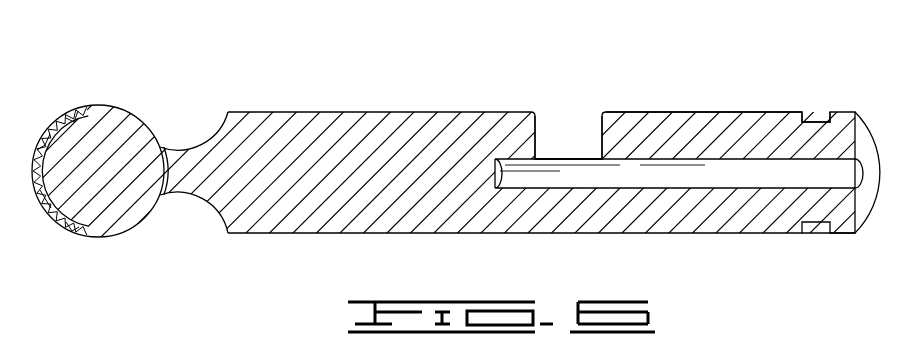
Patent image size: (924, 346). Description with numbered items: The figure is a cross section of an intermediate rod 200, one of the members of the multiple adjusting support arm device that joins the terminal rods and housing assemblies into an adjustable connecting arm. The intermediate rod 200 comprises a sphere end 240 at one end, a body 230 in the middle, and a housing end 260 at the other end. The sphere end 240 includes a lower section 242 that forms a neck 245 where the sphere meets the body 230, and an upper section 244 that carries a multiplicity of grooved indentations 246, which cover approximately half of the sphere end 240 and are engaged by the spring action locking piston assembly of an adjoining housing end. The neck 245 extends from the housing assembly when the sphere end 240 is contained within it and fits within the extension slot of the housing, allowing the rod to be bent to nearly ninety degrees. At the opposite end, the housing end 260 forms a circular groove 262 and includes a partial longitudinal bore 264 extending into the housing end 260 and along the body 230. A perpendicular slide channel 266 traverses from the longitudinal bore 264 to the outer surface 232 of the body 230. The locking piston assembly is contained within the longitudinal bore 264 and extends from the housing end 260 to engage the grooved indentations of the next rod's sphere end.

The intermediate rod 200 is at (455, 163).
The body 230 is at (530, 233).
The outer surface 232 is at (678, 112).
The sphere end 240 is at (113, 238).
The lower section 242 is at (160, 147).
The upper section 244 is at (42, 130).
The neck 245 is at (192, 197).
The grooved indentations 246 is at (43, 208).
The housing end 260 is at (770, 233).
The circular groove 262 is at (808, 120).
The partial longitudinal bore 264 is at (852, 178).
The perpendicular slide channel 266 is at (562, 118).